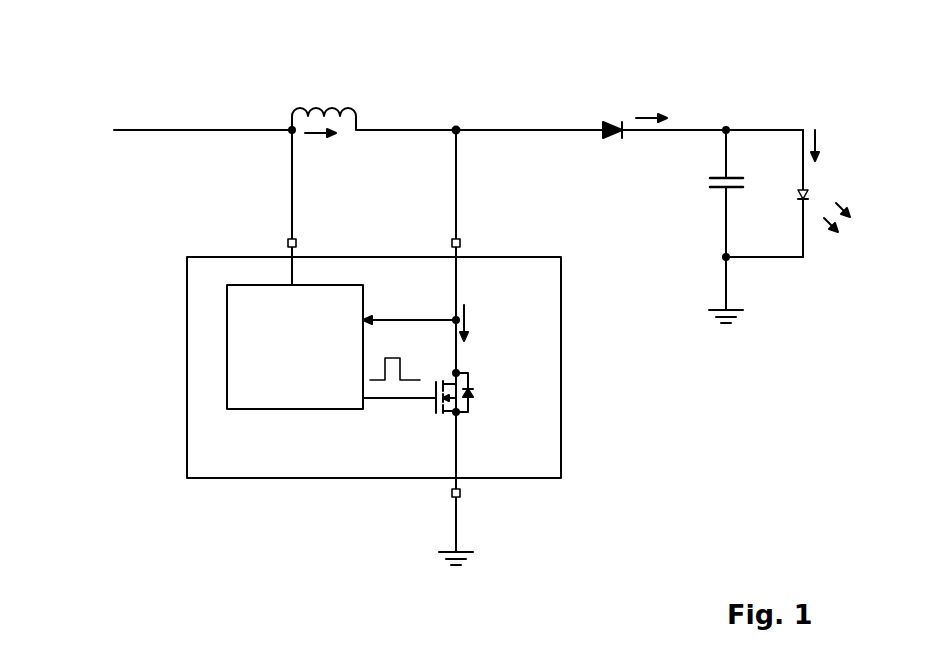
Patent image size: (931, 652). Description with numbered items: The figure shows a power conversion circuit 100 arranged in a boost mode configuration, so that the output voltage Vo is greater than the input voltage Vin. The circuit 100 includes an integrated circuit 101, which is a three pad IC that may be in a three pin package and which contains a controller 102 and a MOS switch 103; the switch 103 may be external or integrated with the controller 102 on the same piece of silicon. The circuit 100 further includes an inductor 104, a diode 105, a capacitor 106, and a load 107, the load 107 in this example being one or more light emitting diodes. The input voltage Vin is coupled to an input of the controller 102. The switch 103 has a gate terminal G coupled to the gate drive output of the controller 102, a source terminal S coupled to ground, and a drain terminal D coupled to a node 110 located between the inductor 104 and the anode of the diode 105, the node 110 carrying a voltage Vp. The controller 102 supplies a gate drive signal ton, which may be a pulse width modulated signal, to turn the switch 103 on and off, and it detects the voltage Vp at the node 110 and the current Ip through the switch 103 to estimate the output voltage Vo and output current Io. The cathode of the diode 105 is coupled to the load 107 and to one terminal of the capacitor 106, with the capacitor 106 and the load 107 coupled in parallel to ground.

The power conversion circuit 100 is at (115, 244).
The integrated circuit 101 is at (561, 418).
The controller 102 is at (300, 410).
The MOS switch 103 is at (438, 420).
The inductor 104 is at (359, 104).
The diode 105 is at (603, 121).
The capacitor 106 is at (712, 184).
The load 107 is at (800, 196).
The node 110 is at (456, 127).